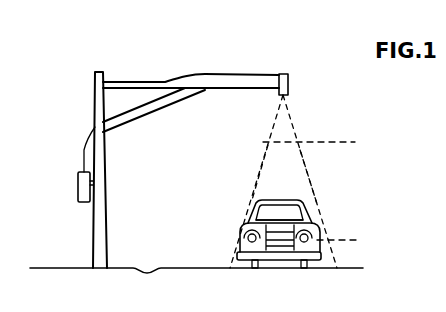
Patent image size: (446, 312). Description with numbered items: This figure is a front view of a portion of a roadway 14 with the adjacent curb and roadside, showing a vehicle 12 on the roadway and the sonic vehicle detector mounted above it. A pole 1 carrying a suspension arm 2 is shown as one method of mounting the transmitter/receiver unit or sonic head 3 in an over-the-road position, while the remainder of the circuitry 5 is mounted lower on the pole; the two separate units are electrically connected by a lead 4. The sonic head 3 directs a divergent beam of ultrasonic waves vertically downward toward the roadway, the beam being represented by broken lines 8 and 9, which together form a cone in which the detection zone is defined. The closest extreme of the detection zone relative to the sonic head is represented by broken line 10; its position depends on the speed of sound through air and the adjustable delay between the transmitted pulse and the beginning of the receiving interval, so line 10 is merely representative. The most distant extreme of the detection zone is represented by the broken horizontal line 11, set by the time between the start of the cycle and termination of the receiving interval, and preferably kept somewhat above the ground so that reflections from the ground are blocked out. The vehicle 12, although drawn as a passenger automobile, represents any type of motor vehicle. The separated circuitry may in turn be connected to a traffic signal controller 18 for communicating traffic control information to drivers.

The pole 1 is at (93, 240).
The suspension arm 2 is at (133, 82).
The transmitter/receiver unit or sonic head 3 is at (290, 78).
The lead 4 is at (84, 158).
The remainder of the circuitry 5 is at (78, 190).
The broken line 8 is at (268, 129).
The broken line 9 is at (312, 181).
The broken line 10 is at (328, 142).
The broken horizontal line 11 is at (343, 240).
The vehicle 12 is at (273, 201).
The roadway 14 is at (212, 268).
The traffic signal controller 18 is at (259, 168).